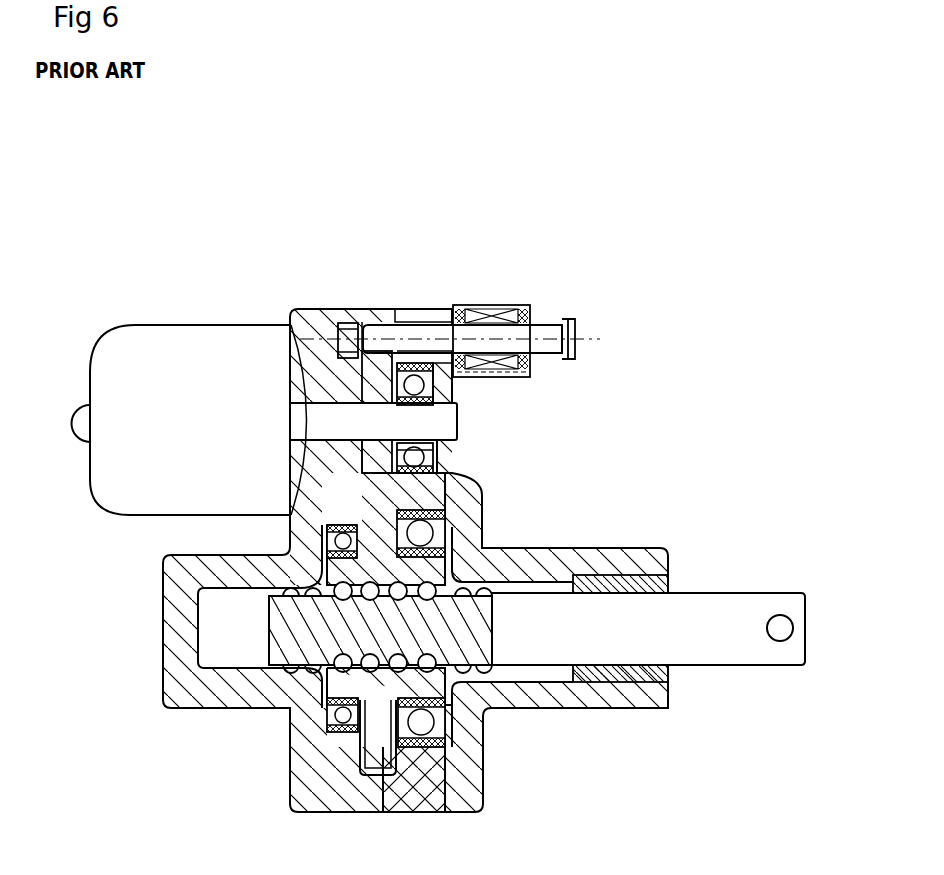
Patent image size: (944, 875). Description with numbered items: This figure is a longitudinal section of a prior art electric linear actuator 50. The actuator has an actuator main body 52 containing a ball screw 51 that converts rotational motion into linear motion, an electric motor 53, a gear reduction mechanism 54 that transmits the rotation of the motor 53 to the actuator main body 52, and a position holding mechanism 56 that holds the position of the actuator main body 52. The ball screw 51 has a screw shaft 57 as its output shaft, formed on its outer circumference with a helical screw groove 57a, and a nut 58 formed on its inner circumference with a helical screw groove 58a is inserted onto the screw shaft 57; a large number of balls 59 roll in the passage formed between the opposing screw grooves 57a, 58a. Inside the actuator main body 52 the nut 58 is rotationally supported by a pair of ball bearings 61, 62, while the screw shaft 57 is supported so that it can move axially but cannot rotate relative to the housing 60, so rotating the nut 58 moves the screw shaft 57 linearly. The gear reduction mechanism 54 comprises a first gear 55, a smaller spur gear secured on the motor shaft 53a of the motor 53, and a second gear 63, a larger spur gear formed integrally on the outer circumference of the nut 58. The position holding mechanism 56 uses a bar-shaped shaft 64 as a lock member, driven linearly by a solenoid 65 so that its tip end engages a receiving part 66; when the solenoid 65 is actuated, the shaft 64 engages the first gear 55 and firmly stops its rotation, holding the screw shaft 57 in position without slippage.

The electric linear actuator 50 is at (140, 237).
The ball screw 51 is at (483, 775).
The actuator main body 52 is at (722, 575).
The electric motor 53 is at (225, 340).
The motor shaft 53a is at (322, 412).
The gear reduction mechanism 54 is at (530, 412).
The first gear 55 is at (459, 416).
The position holding mechanism 56 is at (538, 297).
The screw shaft 57 is at (280, 634).
The helical screw groove 57a is at (486, 580).
The nut 58 is at (378, 762).
The helical screw groove 58a is at (440, 690).
The balls 59 is at (325, 690).
The housing 60 is at (597, 548).
The ball bearing 61 is at (340, 727).
The ball bearing 62 is at (424, 732).
The second gear 63 is at (445, 478).
The shaft 64 is at (530, 328).
The solenoid 65 is at (488, 302).
The receiving part 66 is at (347, 320).